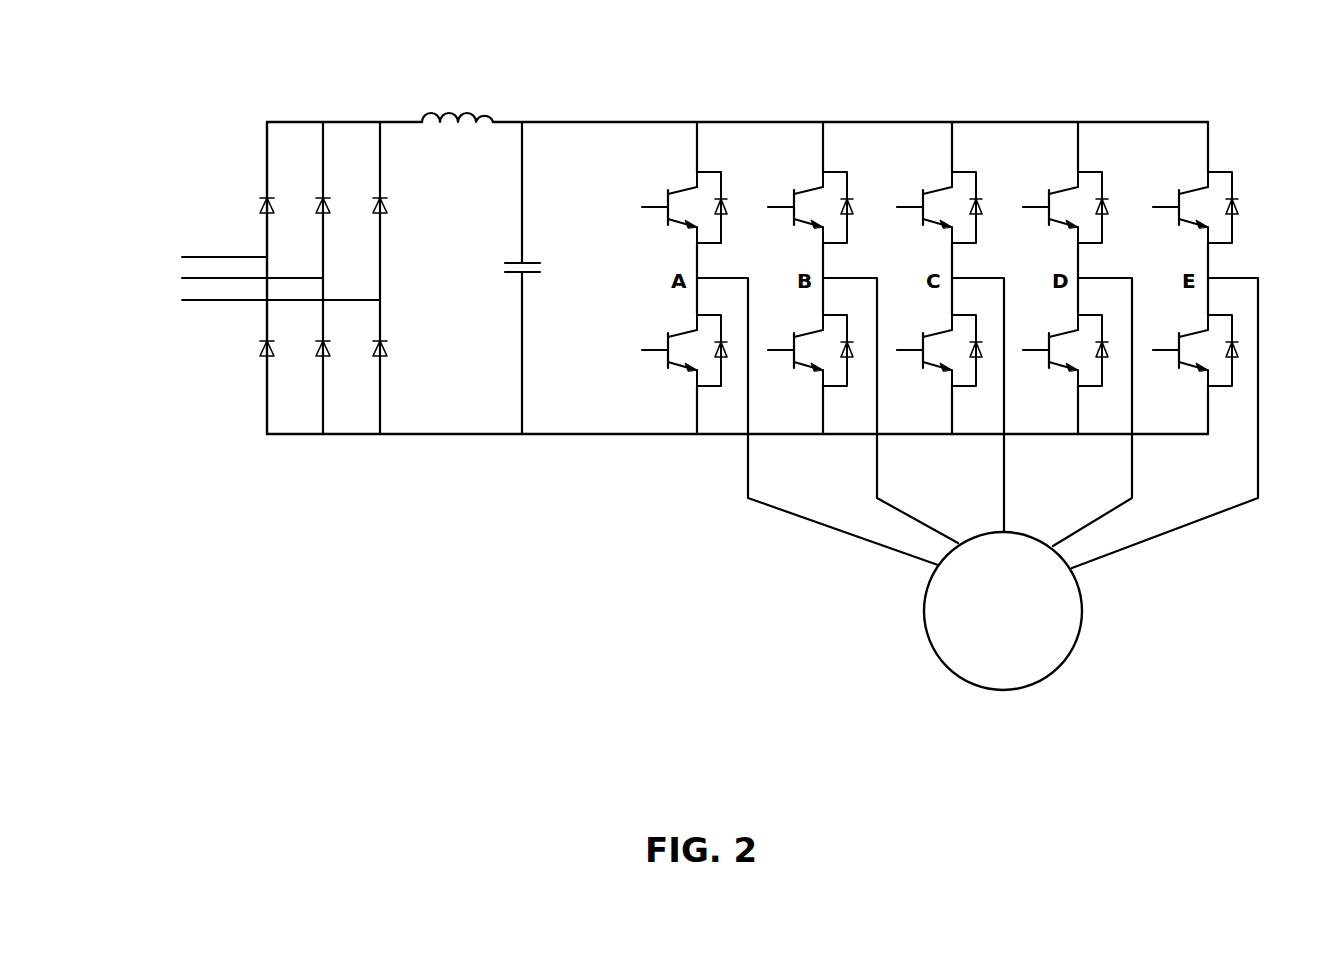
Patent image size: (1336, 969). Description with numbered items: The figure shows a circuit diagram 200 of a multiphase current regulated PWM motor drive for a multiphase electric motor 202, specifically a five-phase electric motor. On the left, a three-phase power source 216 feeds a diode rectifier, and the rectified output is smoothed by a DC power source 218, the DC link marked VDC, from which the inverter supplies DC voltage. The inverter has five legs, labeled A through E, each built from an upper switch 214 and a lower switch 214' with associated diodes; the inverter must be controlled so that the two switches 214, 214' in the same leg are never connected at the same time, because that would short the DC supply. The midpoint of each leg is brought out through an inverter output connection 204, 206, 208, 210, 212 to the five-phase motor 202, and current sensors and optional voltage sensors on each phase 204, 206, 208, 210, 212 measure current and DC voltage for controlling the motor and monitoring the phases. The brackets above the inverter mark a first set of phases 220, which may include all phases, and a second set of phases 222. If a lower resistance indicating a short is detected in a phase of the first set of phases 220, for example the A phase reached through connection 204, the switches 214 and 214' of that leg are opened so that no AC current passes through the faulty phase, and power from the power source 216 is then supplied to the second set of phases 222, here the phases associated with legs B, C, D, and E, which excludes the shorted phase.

The circuit diagram 200 is at (199, 186).
The multiphase electric motor 202 is at (1003, 690).
The phase connection (leg A) 204 is at (846, 533).
The phase connection (leg B) 206 is at (877, 472).
The phase connection (leg C) 208 is at (1004, 472).
The phase connection (leg D) 210 is at (1132, 472).
The phase connection (leg E) 212 is at (1258, 468).
The switch 214 is at (719, 193).
The switch 214' is at (661, 313).
The power source 216 is at (165, 325).
The DC power source 218 is at (465, 298).
The first set of phases 220 is at (916, 235).
The second set of phases 222 is at (1003, 211).